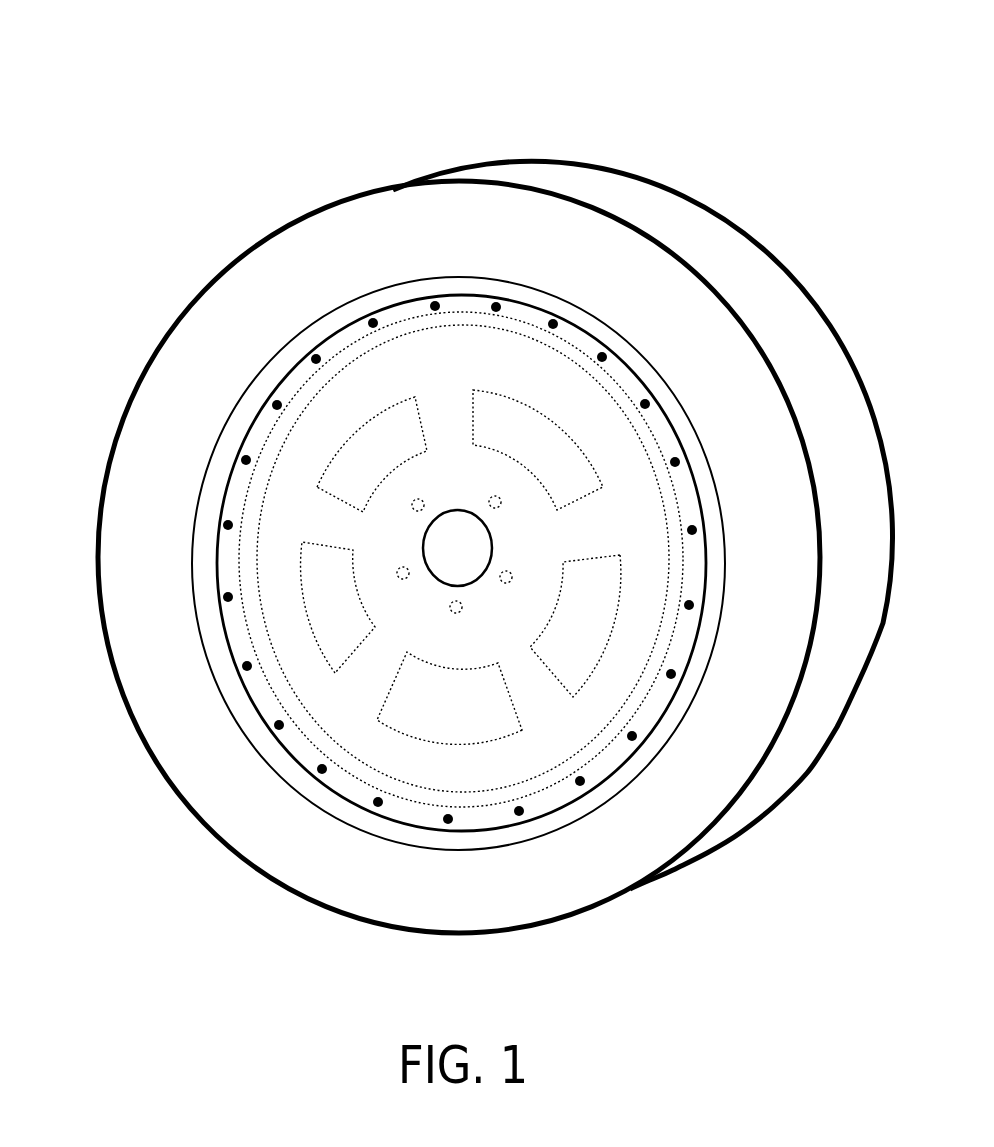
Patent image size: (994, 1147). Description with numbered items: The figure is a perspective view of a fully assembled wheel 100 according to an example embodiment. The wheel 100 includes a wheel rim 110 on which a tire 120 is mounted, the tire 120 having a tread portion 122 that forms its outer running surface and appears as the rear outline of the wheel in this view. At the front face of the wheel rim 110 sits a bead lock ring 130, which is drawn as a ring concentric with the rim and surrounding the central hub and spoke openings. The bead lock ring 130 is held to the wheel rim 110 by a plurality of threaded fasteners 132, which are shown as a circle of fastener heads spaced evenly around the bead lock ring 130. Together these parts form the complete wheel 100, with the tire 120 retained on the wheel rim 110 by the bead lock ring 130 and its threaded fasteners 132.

The wheel 100 is at (473, 476).
The wheel rim 110 is at (385, 505).
The tire 120 is at (473, 547).
The tread portion 122 is at (807, 342).
The bead lock ring 130 is at (449, 505).
The threaded fasteners 132 is at (373, 322).